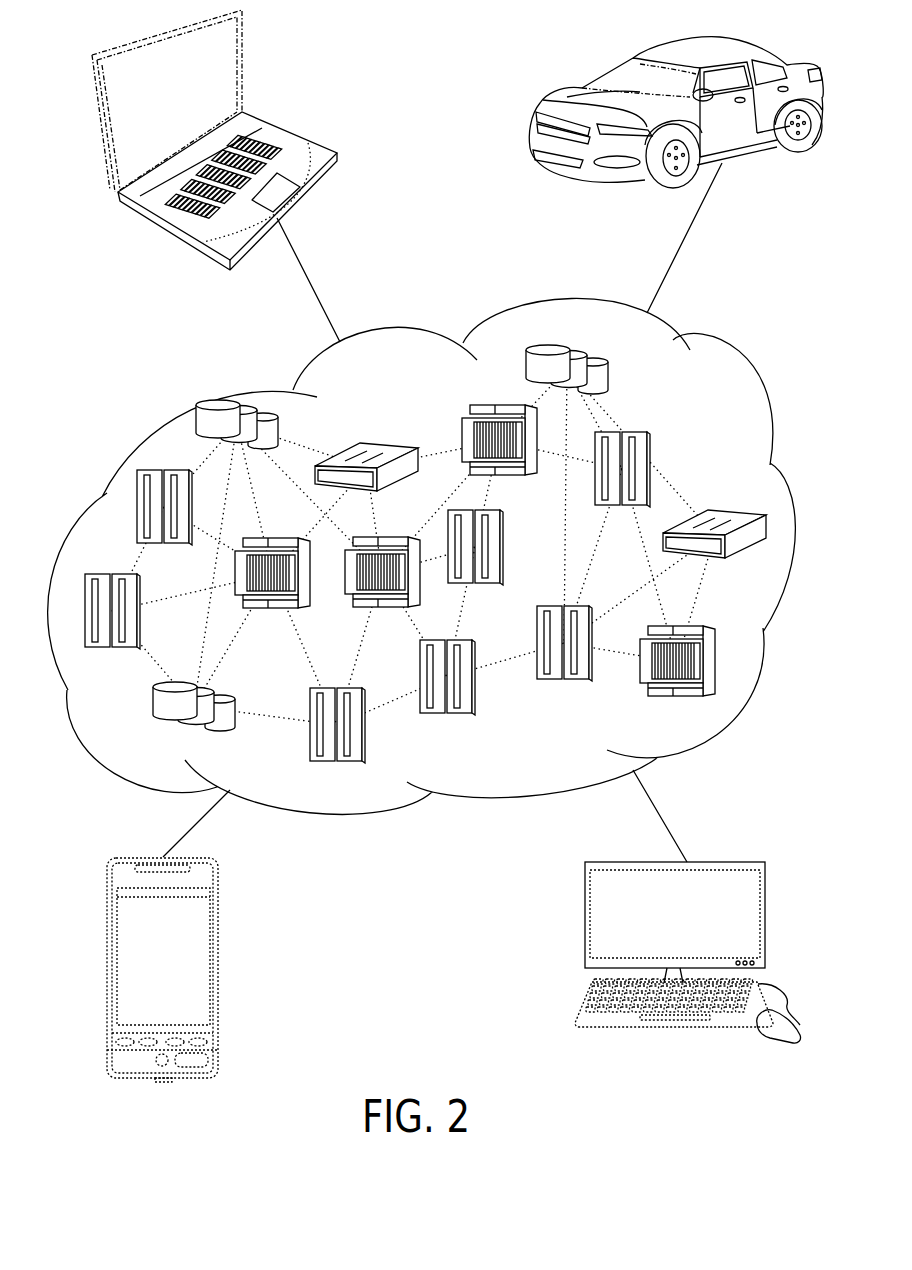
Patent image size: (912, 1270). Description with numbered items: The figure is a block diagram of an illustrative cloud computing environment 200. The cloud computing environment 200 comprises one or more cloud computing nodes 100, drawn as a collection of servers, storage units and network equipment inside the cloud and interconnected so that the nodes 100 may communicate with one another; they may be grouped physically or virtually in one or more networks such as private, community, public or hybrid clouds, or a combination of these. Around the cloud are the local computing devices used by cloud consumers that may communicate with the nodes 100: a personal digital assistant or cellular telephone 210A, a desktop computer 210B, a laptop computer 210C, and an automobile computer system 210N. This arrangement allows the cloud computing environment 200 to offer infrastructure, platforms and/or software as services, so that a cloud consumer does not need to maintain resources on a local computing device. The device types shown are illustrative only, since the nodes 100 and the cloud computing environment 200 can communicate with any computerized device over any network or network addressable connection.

The cloud computing node 100 is at (739, 496).
The cloud computing environment 200 is at (747, 360).
The personal digital assistant (PDA) or cellular telephone 210A is at (217, 882).
The desktop computer 210B is at (765, 880).
The laptop computer 210C is at (295, 137).
The automobile computer system 210N is at (778, 53).